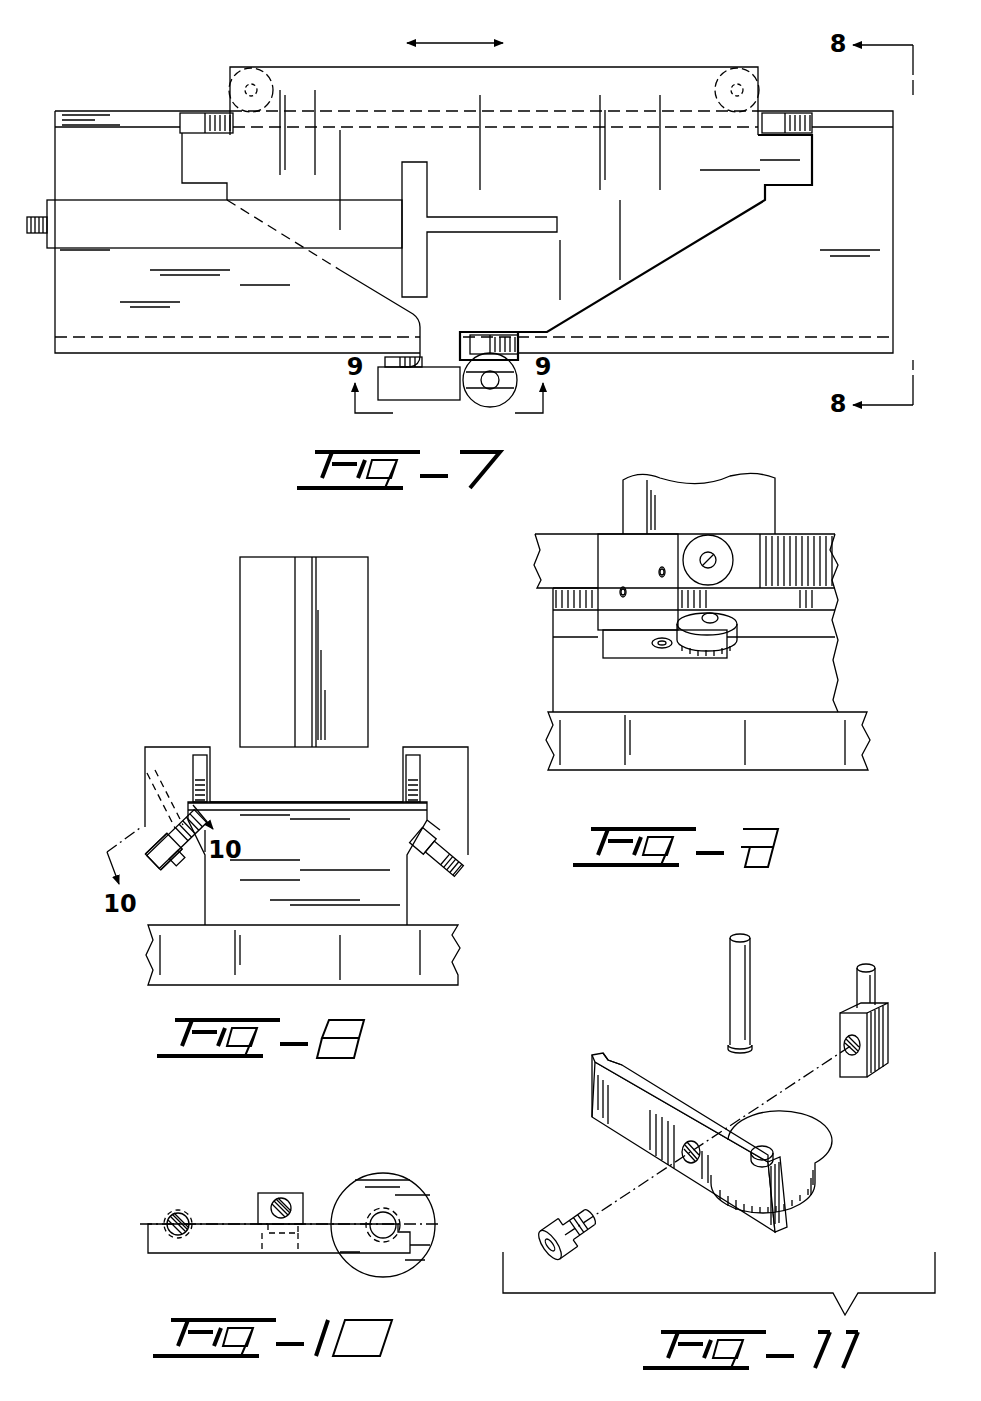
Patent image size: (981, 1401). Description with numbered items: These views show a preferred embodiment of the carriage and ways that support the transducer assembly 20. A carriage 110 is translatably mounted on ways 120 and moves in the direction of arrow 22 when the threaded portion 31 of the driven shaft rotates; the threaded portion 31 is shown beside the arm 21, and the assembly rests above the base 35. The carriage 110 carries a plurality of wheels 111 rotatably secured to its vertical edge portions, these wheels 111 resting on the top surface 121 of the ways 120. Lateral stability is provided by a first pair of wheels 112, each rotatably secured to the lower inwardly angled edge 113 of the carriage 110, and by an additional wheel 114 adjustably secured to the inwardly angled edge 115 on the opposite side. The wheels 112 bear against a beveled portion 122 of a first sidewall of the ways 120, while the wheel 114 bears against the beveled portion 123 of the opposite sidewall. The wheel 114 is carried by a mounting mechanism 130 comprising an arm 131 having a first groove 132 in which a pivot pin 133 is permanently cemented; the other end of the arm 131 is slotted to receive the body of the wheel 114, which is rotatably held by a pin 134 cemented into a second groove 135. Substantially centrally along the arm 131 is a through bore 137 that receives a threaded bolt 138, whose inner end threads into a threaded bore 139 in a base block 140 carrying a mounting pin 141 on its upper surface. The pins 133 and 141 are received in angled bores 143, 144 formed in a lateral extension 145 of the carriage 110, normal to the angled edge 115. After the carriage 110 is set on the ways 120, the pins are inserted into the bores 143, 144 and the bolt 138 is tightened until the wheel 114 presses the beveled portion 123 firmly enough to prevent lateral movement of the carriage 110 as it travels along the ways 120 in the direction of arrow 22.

In FIG. 7, the transducer assembly 20 is at (524, 214).
In FIG. 8, the transducer assembly 20 is at (237, 589).
In FIG. 7, the arm 21 is at (95, 215).
In FIG. 7, the arrow 22 is at (414, 42).
In FIG. 9, the arrow 22 is at (778, 492).
In FIG. 7, the threaded portion 31 is at (35, 215).
In FIG. 8, the base 35 is at (440, 945).
In FIG. 9, the base 35 is at (860, 714).
In FIG. 7, the carriage 110 is at (585, 66).
In FIG. 7, the wheels 111 is at (195, 120).
In FIG. 8, the wheels 111 is at (199, 762).
In FIG. 9, the wheels 111 is at (710, 545).
In FIG. 7, the first pair of wheels 112 is at (235, 108).
In FIG. 8, the first pair of wheels 112 is at (468, 868).
In FIG. 8, the lower inwardly angled edge 113 is at (440, 829).
In FIG. 7, the wheel 114 is at (490, 408).
In FIG. 8, the wheel 114 is at (162, 850).
In FIG. 9, the wheel 114 is at (742, 640).
In FIG. 10, the wheel 114 is at (372, 1175).
In FIG. 11, the wheel 114 is at (800, 1160).
In FIG. 8, the inwardly angled edge 115 is at (182, 815).
In FIG. 7, the ways 120 is at (122, 356).
In FIG. 8, the ways 120 is at (410, 888).
In FIG. 9, the ways 120 is at (842, 665).
In FIG. 7, the top surface 121 is at (103, 302).
In FIG. 8, the top surface 121 is at (415, 803).
In FIG. 9, the top surface 121 is at (790, 588).
In FIG. 8, the beveled portion 122 is at (412, 827).
In FIG. 8, the beveled portion 123 is at (205, 858).
In FIG. 9, the beveled portion 123 is at (820, 625).
In FIG. 9, the mounting mechanism 130 is at (640, 660).
In FIG. 8, the arm 131 is at (172, 870).
In FIG. 10, the arm 131 is at (195, 1246).
In FIG. 11, the arm 131 is at (612, 1115).
In FIG. 10, the first groove 132 is at (170, 1240).
In FIG. 11, the first groove 132 is at (612, 1060).
In FIG. 9, the pivot pin 133 is at (618, 592).
In FIG. 10, the pivot pin 133 is at (181, 1213).
In FIG. 11, the pivot pin 133 is at (735, 975).
In FIG. 8, the pin 134 is at (185, 868).
In FIG. 10, the pin 134 is at (385, 1225).
In FIG. 11, the pin 134 is at (766, 1147).
In FIG. 10, the second groove 135 is at (372, 1236).
In FIG. 11, the through bore 137 is at (690, 1165).
In FIG. 10, the threaded bolt 138 is at (280, 1250).
In FIG. 11, the threaded bolt 138 is at (558, 1232).
In FIG. 11, the threaded bore 139 is at (846, 1040).
In FIG. 8, the base block 140 is at (145, 840).
In FIG. 10, the base block 140 is at (300, 1200).
In FIG. 11, the base block 140 is at (885, 1035).
In FIG. 9, the mounting pin 141 is at (664, 567).
In FIG. 10, the mounting pin 141 is at (284, 1200).
In FIG. 11, the mounting pin 141 is at (860, 987).
In FIG. 9, the angled bore 143 is at (621, 587).
In FIG. 9, the angled bore 144 is at (655, 570).
In FIG. 7, the lateral extension 145 is at (407, 388).
In FIG. 9, the lateral extension 145 is at (605, 620).